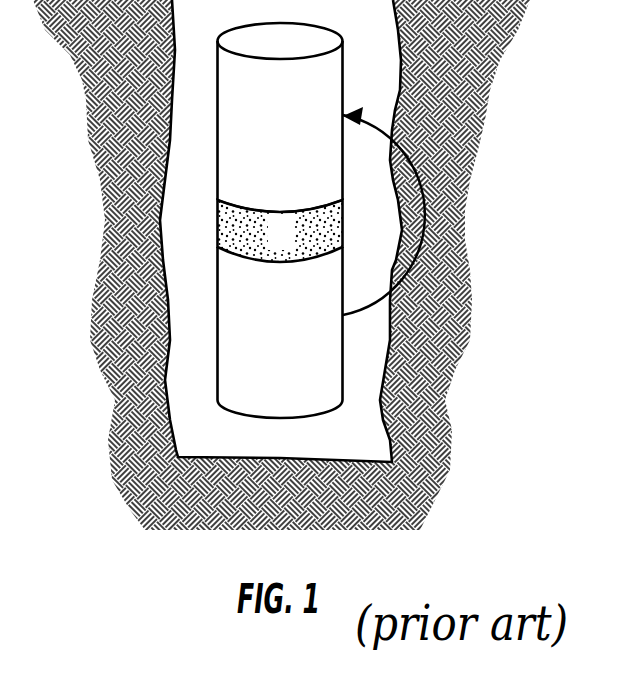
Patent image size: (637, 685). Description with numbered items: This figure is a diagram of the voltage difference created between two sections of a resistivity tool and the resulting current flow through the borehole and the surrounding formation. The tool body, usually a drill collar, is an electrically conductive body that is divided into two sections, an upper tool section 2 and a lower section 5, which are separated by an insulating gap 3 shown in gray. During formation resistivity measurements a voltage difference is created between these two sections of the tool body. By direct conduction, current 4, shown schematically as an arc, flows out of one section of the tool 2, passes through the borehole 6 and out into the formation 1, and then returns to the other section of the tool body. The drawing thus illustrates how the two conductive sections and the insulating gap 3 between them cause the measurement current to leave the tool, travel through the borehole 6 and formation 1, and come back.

The formation 1 is at (458, 90).
The tool section 2 is at (292, 148).
The insulating gap 3 is at (292, 250).
The current 4 is at (422, 213).
The lower electrode section of tool 5 is at (292, 358).
The borehole 6 is at (360, 448).